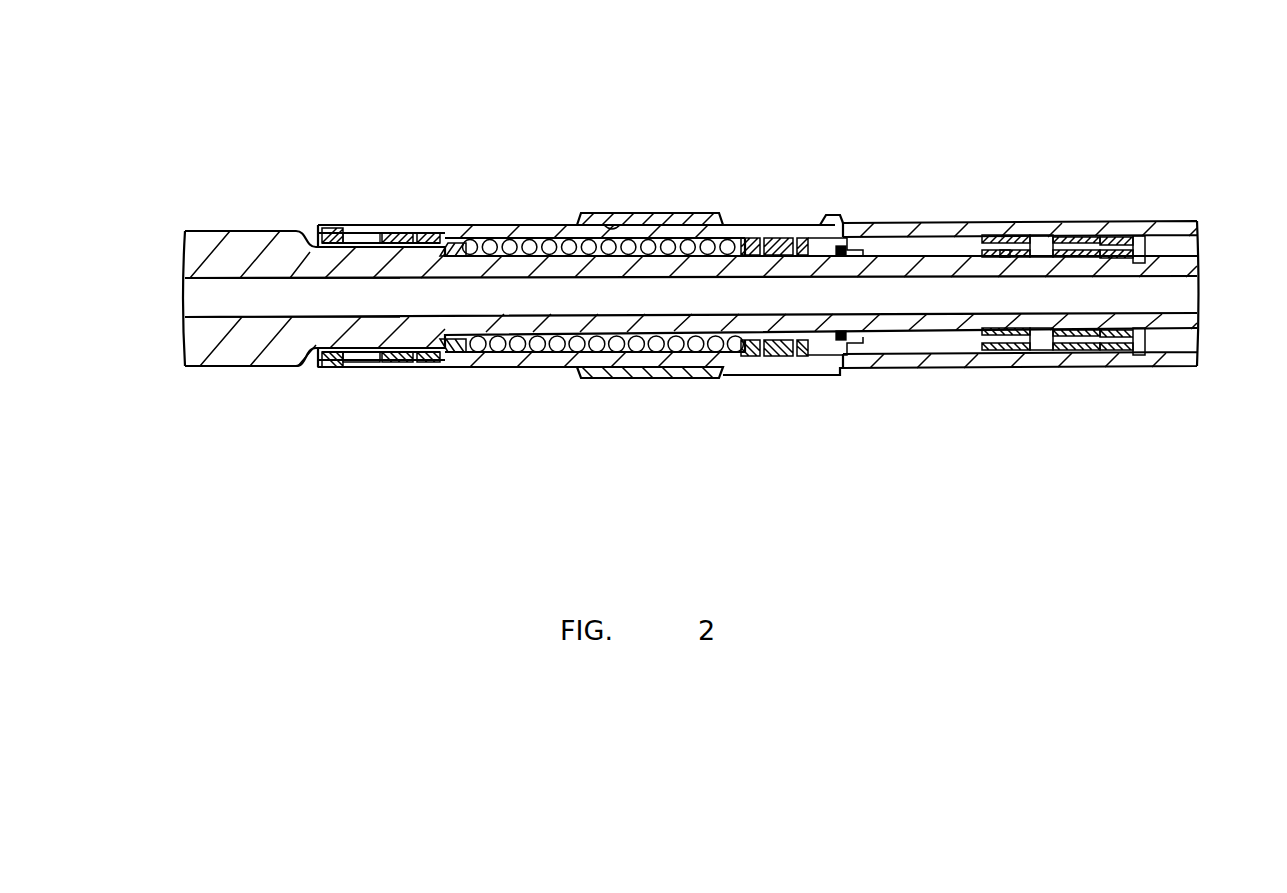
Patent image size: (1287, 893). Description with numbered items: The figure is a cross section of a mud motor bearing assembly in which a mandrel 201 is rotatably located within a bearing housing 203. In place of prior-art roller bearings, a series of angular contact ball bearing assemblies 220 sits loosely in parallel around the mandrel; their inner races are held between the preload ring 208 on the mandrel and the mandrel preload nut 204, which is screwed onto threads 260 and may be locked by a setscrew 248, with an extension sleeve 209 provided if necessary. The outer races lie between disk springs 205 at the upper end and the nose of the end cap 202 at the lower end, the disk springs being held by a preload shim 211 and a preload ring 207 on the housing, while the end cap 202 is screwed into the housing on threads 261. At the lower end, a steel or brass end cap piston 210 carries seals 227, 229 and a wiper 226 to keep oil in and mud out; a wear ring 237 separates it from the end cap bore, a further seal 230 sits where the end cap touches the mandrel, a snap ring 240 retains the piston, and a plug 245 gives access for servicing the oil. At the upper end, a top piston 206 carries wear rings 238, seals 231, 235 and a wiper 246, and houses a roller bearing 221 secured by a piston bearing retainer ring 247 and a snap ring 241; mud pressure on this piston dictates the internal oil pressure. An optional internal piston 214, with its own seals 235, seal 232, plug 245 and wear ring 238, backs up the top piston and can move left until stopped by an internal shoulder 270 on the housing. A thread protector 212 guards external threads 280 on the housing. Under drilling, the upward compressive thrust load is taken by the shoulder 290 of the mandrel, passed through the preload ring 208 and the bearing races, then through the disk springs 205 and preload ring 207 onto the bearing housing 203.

The mandrel 201 is at (205, 250).
The end cap 202 is at (358, 230).
The bearing housing 203 is at (578, 374).
The mandrel preload nut 204 is at (859, 238).
The disk springs 205 is at (778, 238).
The top piston 206 is at (1082, 357).
The preload ring 207 is at (797, 357).
The preload ring 208 is at (449, 240).
The extension sleeve 209 is at (748, 335).
The end cap piston 210 is at (364, 367).
The preload shim 211 is at (778, 358).
The thread protector 212 is at (669, 214).
The internal piston 214 is at (947, 367).
The angular contact ball bearing assemblies 220 is at (548, 238).
The roller bearing 221 is at (1084, 237).
The wiper 226 is at (338, 355).
The seal 227 is at (334, 367).
The seal 229 is at (403, 232).
The seal 230 is at (436, 235).
The seal 231 is at (1115, 257).
The seal 232 is at (1032, 257).
The seals 235 is at (1013, 355).
The wear ring 237 is at (327, 228).
The wear rings 238 is at (1038, 237).
The snap ring 240 is at (316, 365).
The snap ring 241 is at (1027, 357).
The plug 245 is at (1130, 237).
The wiper 246 is at (1137, 253).
The piston bearing retainer ring 247 is at (1060, 357).
The setscrew 248 is at (842, 355).
The threads 260 is at (828, 233).
The threads 261 is at (438, 367).
The internal shoulder 270 is at (887, 232).
The threads 280 is at (614, 226).
The shoulder 290 is at (445, 252).